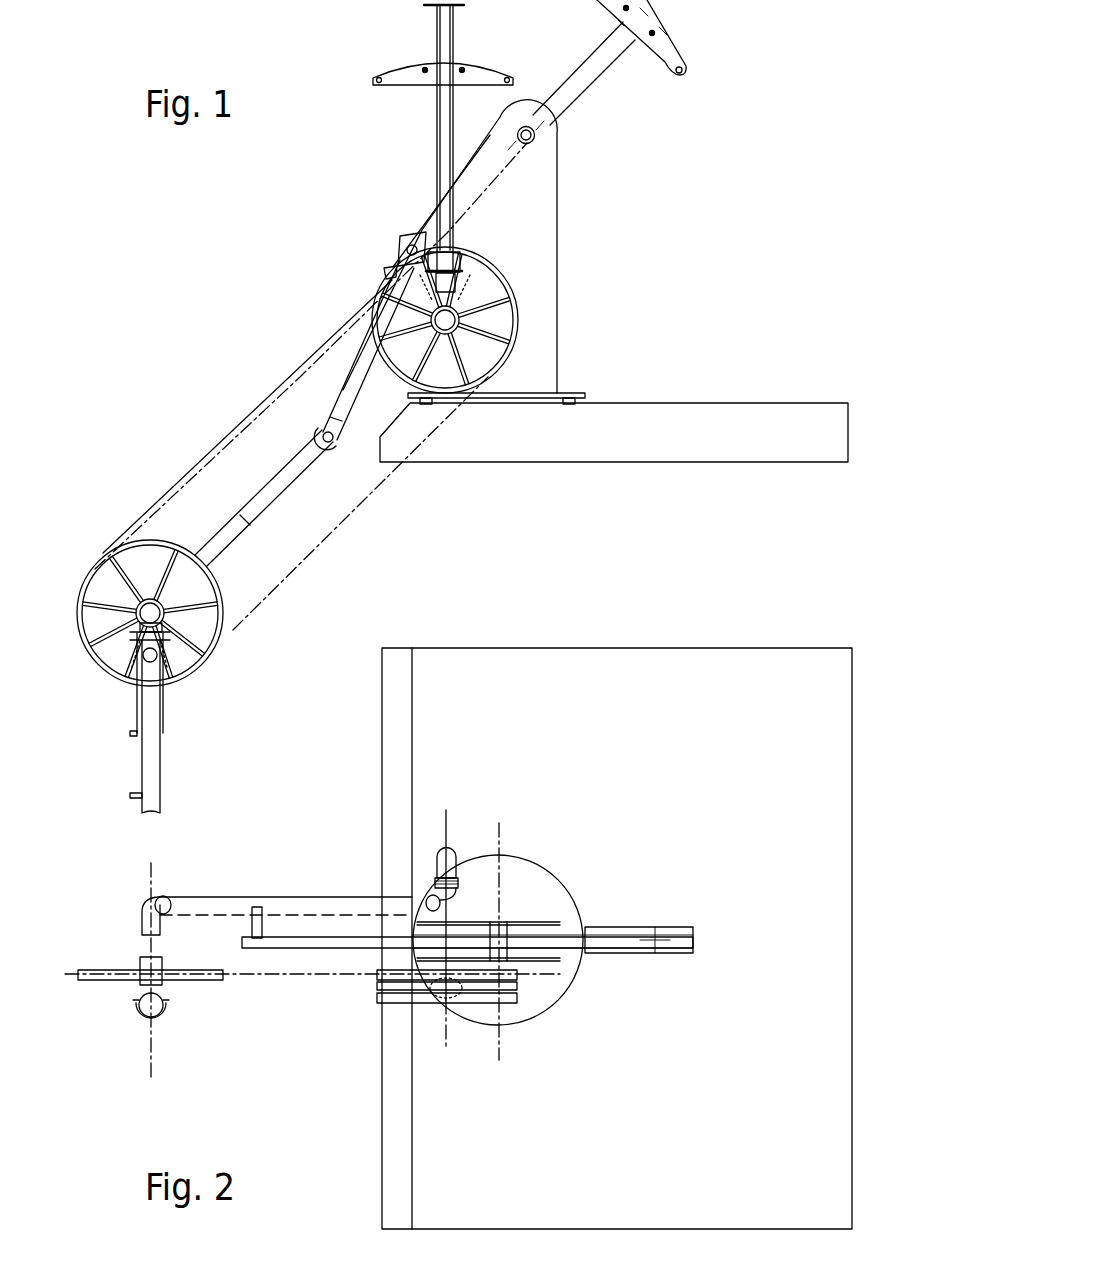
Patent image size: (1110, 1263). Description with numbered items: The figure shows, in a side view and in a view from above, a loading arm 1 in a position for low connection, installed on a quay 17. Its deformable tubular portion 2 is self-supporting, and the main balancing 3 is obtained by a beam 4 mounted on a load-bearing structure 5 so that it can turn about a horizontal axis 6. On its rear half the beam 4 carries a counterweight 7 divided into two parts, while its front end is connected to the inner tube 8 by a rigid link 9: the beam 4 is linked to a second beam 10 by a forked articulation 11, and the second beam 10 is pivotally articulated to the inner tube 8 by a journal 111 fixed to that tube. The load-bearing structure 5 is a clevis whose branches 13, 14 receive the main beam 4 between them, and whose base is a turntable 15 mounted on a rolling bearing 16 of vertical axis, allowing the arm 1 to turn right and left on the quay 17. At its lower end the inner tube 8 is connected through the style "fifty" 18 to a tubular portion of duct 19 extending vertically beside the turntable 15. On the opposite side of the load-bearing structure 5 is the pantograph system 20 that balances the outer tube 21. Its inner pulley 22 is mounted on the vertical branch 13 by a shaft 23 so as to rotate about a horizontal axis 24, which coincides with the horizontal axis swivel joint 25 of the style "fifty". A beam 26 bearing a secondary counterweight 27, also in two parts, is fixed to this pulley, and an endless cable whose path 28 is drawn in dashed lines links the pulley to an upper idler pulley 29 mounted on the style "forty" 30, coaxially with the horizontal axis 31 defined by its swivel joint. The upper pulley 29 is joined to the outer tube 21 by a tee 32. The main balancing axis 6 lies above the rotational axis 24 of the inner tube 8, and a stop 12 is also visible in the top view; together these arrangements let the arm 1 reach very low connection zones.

In FIG. 1, the loading arm 1 is at (320, 160).
In FIG. 1, the deformable tubular portion 2 is at (265, 557).
In FIG. 1, the main balancing 3 is at (390, 225).
In FIG. 1, the beam 4 is at (582, 73).
In FIG. 2, the beam 4 is at (567, 940).
In FIG. 1, the load-bearing structure 5 is at (570, 228).
In FIG. 1, the horizontal axis 6 is at (530, 140).
In FIG. 2, the horizontal axis 6 is at (502, 1053).
In FIG. 1, the counterweight 7 is at (672, 60).
In FIG. 2, the counterweight 7 is at (678, 930).
In FIG. 1, the inner tube 8 is at (268, 490).
In FIG. 2, the inner tube 8 is at (305, 907).
In FIG. 1, the rigid link 9 is at (338, 358).
In FIG. 1, the second beam 10 is at (353, 380).
In FIG. 2, the second beam 10 is at (302, 942).
In FIG. 1, the forked articulation 11 is at (390, 255).
In FIG. 2, the forked articulation 11 is at (387, 953).
In FIG. 2, the stop 12 is at (252, 925).
In FIG. 2, the branch 13 is at (543, 962).
In FIG. 2, the branch 14 is at (555, 922).
In FIG. 1, the turntable 15 is at (573, 393).
In FIG. 2, the turntable 15 is at (510, 903).
In FIG. 1, the rolling bearing 16 is at (583, 400).
In FIG. 1, the quay 17 is at (733, 448).
In FIG. 2, the quay 17 is at (732, 1121).
In FIG. 2, the style "50" 18 is at (432, 875).
In FIG. 2, the tubular portion of duct 19 is at (462, 845).
In FIG. 1, the pantograph system 20 is at (457, 422).
In FIG. 1, the outer tube 21 is at (152, 775).
In FIG. 1, the inner pulley 22 is at (512, 362).
In FIG. 2, the shaft 23 is at (425, 895).
In FIG. 2, the horizontal axis 24 is at (447, 1043).
In FIG. 2, the horizontal axis swivel joint 25 is at (455, 860).
In FIG. 1, the beam 26 is at (443, 122).
In FIG. 1, the secondary counterweight 27 is at (403, 70).
In FIG. 1, the path 28 is at (258, 607).
In FIG. 1, the upper idler pulley 29 is at (107, 670).
In FIG. 2, the upper idler pulley 29 is at (93, 982).
In FIG. 1, the style "40" 30 is at (130, 633).
In FIG. 2, the horizontal axis 31 is at (152, 1067).
In FIG. 1, the tee 32 is at (163, 660).
In FIG. 1, the journal 111 is at (333, 443).